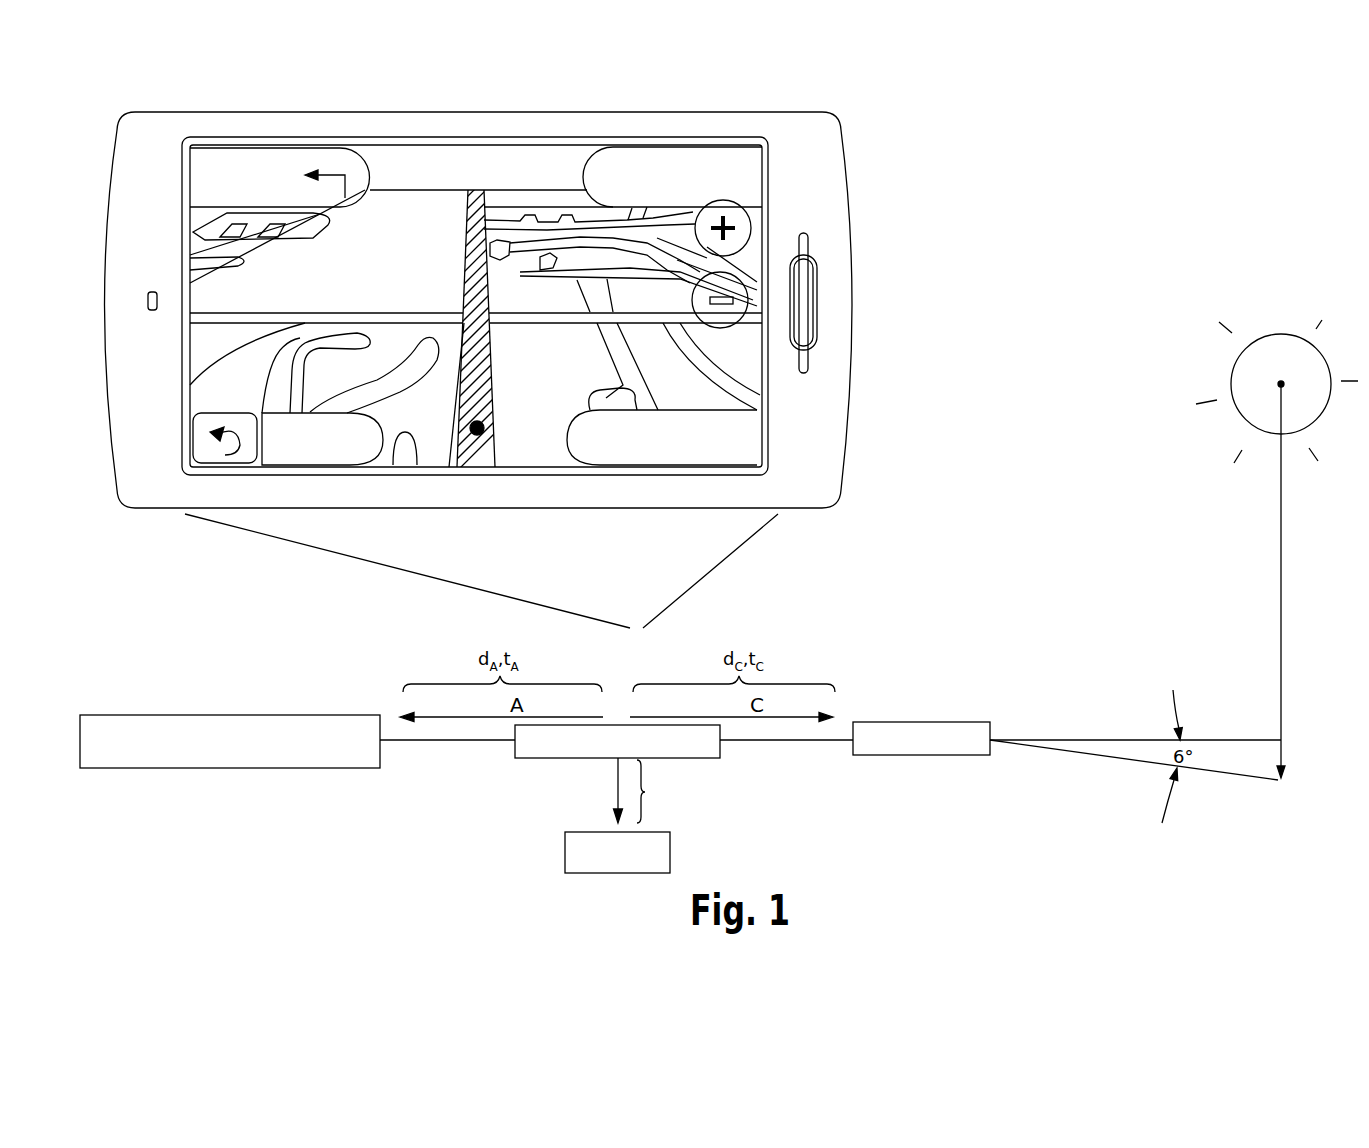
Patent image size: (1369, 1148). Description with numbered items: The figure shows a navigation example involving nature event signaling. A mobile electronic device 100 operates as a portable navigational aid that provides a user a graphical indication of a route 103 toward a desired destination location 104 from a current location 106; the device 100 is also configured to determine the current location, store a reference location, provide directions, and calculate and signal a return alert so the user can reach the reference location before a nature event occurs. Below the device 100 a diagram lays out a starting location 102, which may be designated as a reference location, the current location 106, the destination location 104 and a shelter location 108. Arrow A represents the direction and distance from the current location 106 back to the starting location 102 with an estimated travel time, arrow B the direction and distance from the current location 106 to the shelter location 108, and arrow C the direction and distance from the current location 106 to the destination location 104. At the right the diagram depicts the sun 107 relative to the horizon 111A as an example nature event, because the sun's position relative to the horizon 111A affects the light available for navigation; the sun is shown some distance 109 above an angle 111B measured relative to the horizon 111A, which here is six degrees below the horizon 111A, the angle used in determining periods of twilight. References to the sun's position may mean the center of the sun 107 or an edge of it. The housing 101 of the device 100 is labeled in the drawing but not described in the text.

The mobile electronic device 100 is at (870, 132).
The device housing 101 is at (841, 265).
The starting location 102 is at (265, 770).
The route 103 is at (760, 743).
The destination location 104 is at (917, 721).
The current location 106 is at (488, 424).
The sun 107 is at (473, 272).
The shelter location 108 is at (590, 875).
The distance 109 is at (1281, 548).
The horizon 111A is at (1043, 737).
The angle 111B is at (1080, 755).